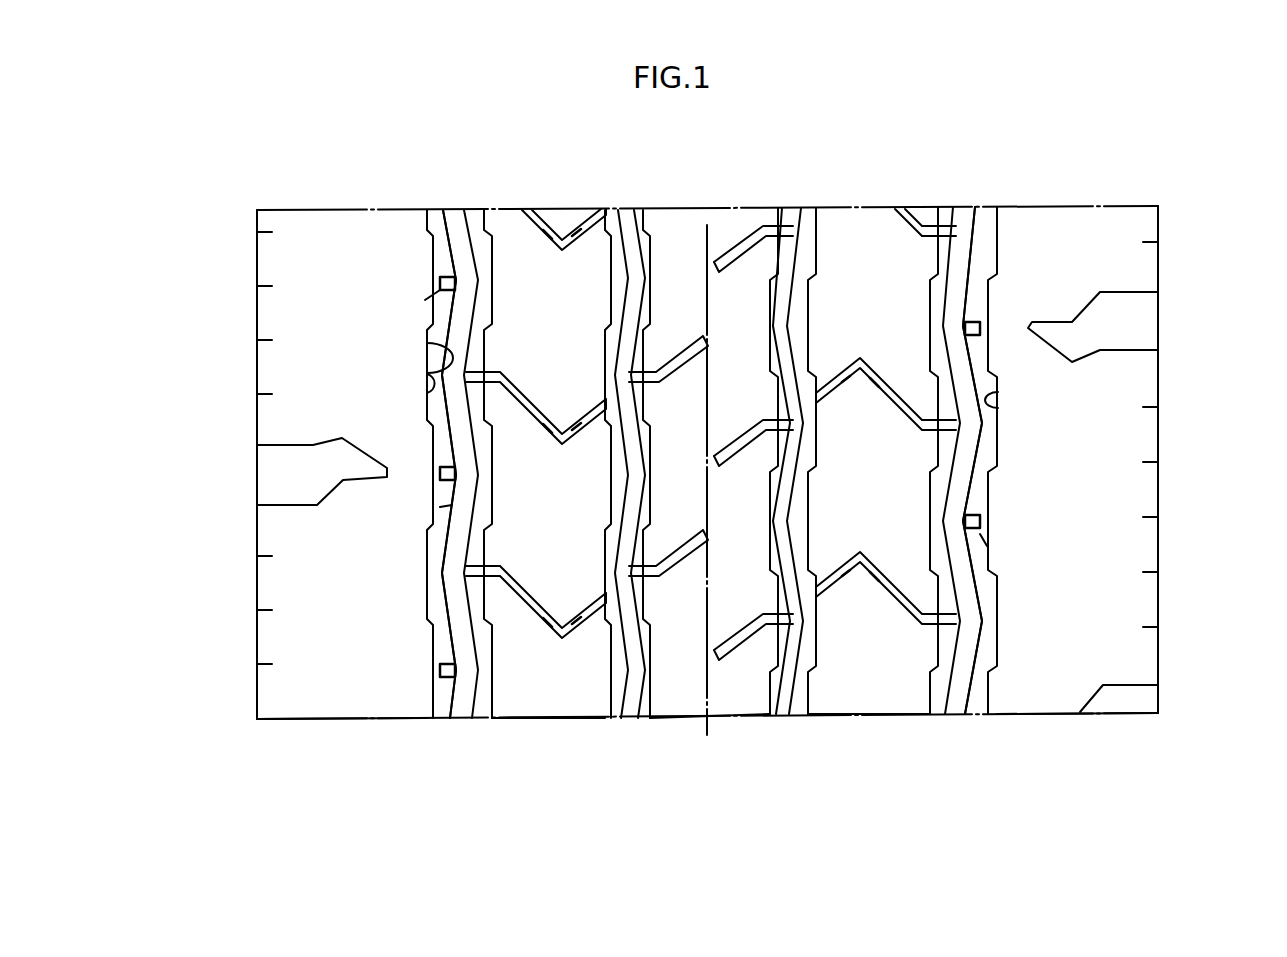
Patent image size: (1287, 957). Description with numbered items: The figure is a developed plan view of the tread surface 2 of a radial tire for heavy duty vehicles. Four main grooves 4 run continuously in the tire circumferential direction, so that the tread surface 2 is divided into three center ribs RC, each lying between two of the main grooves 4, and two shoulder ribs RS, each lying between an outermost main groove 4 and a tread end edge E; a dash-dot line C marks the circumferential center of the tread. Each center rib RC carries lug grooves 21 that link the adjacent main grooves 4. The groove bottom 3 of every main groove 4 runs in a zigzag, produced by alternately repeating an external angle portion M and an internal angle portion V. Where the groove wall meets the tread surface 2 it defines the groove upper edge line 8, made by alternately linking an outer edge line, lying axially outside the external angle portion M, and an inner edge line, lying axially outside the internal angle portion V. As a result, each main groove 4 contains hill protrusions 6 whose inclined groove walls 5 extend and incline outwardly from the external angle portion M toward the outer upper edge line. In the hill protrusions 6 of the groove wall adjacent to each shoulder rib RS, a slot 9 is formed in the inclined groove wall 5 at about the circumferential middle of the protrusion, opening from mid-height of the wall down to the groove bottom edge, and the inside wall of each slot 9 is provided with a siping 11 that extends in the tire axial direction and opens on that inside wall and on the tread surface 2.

The tread surface 2 is at (1056, 221).
The groove bottom 3 is at (497, 630).
The main groove 4 is at (467, 696).
The inclined groove wall 5 is at (425, 300).
The hill protrusion 6 is at (462, 447).
The groove upper edge line 8 is at (427, 392).
The slot 9 is at (440, 277).
The siping 11 is at (440, 285).
The lug groove 21 is at (523, 583).
The tire equatorial center line C is at (707, 225).
The tread end edge E is at (257, 420).
The external angle portion M is at (452, 505).
The internal angle portion V is at (427, 343).
The shoulder rib RS is at (360, 692).
The center rib RC is at (560, 700).